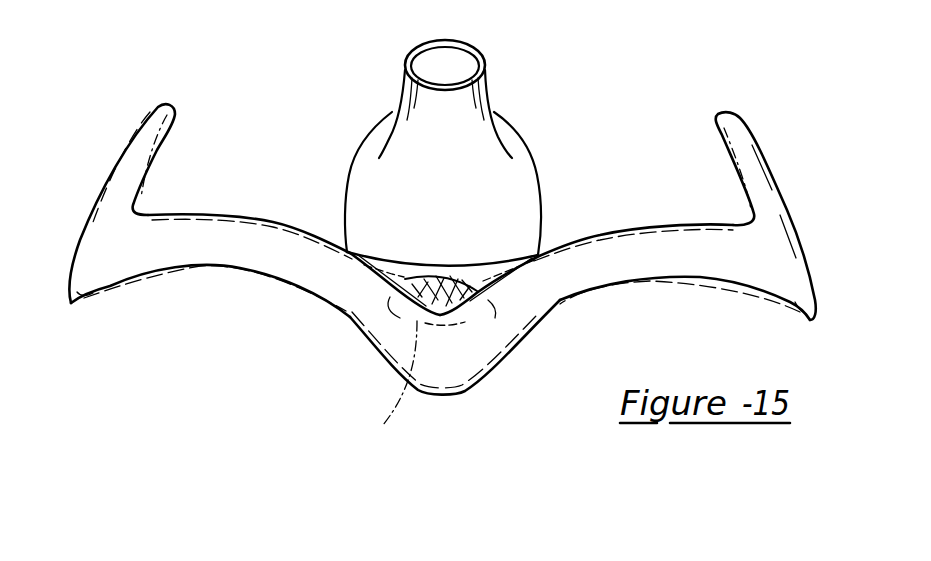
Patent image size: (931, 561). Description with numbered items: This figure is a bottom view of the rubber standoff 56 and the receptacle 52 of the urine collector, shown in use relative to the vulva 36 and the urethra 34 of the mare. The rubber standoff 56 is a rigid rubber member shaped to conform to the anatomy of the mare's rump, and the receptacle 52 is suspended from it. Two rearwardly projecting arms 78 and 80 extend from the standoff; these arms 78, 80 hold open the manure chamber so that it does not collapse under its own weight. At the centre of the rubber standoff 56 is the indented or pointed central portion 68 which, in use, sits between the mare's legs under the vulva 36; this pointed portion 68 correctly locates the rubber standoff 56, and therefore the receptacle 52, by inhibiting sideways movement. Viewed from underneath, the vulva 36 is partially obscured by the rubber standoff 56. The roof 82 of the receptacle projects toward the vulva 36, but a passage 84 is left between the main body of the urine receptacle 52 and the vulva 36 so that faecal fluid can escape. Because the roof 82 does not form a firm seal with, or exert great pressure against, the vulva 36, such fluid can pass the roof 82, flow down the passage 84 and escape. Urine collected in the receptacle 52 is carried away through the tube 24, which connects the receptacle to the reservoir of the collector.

The tube 24 is at (482, 70).
The receptacle 52 is at (380, 123).
The rubber standoff 56 is at (235, 217).
The rearwardly projecting arm 78 is at (741, 121).
The rearwardly projecting arm 80 is at (150, 132).
The roof 82 is at (463, 262).
The passage 84 is at (405, 277).
The urethra 34 is at (470, 307).
The vulva 36 is at (382, 382).
The pointed central portion 68 is at (452, 397).